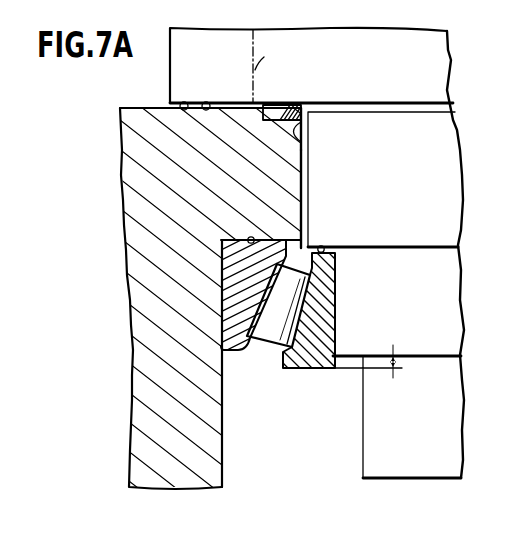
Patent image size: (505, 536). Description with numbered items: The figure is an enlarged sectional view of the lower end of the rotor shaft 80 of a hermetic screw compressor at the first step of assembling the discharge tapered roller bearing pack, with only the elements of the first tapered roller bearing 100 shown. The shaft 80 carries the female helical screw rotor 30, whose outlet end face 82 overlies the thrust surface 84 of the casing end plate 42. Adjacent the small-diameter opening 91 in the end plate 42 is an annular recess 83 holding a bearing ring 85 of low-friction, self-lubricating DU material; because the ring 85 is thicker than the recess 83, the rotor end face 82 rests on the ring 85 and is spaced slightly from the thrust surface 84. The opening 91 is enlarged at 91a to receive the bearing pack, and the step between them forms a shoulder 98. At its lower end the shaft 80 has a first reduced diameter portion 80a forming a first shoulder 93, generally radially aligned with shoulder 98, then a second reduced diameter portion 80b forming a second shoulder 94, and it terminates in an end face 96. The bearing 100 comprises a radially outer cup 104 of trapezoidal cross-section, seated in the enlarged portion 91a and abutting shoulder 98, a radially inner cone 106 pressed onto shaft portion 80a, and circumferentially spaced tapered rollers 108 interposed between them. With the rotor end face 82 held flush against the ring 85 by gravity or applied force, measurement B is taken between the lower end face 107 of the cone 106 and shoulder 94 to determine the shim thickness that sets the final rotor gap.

The female helical screw rotor 30 is at (222, 36).
The end plate 42 is at (150, 120).
The end face 82 is at (204, 102).
The thrust surface 84 is at (183, 107).
The bearing ring 85 is at (285, 103).
The annular recess 83 is at (303, 141).
The opening 91 is at (306, 185).
The enlarged opening portion 91a is at (223, 418).
The shaft 80 is at (448, 159).
The first shoulder 93 is at (328, 243).
The shoulder 98 is at (249, 237).
The cup 104 is at (237, 279).
The first tapered roller bearing 100 is at (274, 357).
The lower end face of cone 107 is at (320, 369).
The tapered rollers 108 is at (288, 303).
The cone 106 is at (320, 332).
The first reduced diameter portion 80a is at (451, 298).
The second shoulder 94 is at (353, 361).
The second reduced diameter portion 80b is at (452, 444).
The end face 96 is at (382, 480).